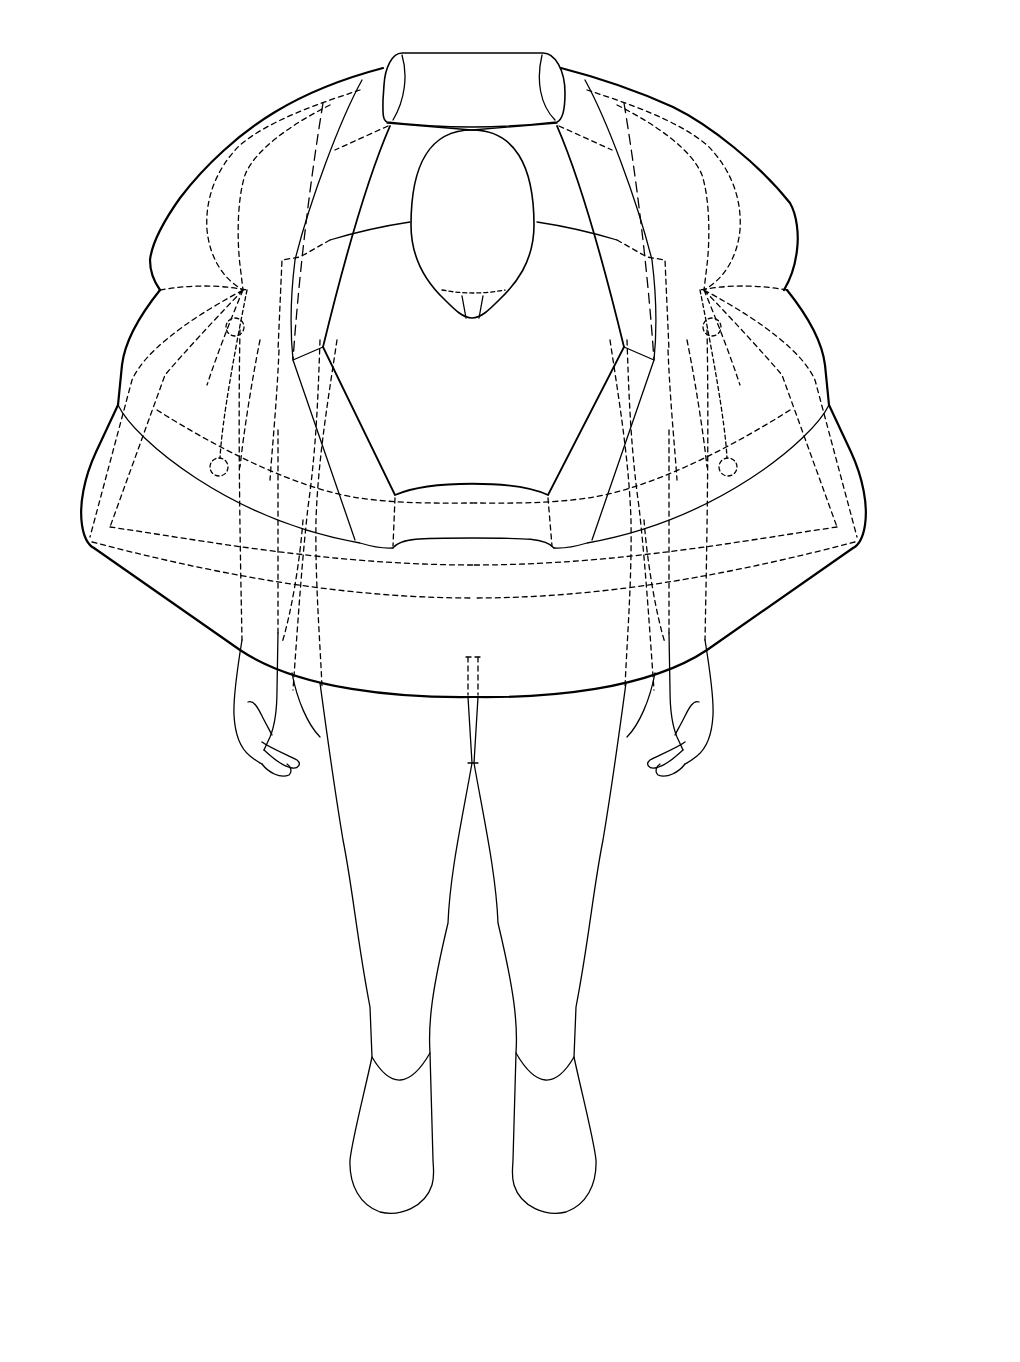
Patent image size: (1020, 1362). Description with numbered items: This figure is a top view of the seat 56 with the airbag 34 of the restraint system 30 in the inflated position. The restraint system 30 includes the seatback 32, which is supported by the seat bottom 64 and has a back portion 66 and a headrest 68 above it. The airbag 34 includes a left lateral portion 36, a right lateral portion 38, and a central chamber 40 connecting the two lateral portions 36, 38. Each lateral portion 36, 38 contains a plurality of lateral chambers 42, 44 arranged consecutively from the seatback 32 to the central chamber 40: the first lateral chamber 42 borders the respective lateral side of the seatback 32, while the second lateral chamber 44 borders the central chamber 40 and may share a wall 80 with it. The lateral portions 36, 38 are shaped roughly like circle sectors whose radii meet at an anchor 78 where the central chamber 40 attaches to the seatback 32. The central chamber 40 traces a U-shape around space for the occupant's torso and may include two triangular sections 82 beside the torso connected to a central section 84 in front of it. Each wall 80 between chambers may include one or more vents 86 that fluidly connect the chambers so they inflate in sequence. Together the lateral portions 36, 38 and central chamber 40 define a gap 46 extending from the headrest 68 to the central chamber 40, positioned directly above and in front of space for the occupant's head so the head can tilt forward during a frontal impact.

The restraint system 30 is at (761, 66).
The seatback 32 is at (430, 53).
The airbag 34 is at (787, 187).
The left lateral portion 36 is at (797, 217).
The right lateral portion 38 is at (205, 150).
The central chamber 40 is at (180, 610).
The first lateral chamber 42 is at (307, 93).
The second lateral chamber 44 is at (143, 310).
The gap 46 is at (370, 449).
The seat 56 is at (319, 737).
The seat bottom 64 is at (627, 742).
The back portion 66 is at (593, 68).
The headrest 68 is at (505, 53).
The anchor 78 is at (243, 290).
The wall 80 is at (473, 515).
The triangular section 82 is at (93, 452).
The central section 84 is at (415, 697).
The vent 86 is at (474, 383).